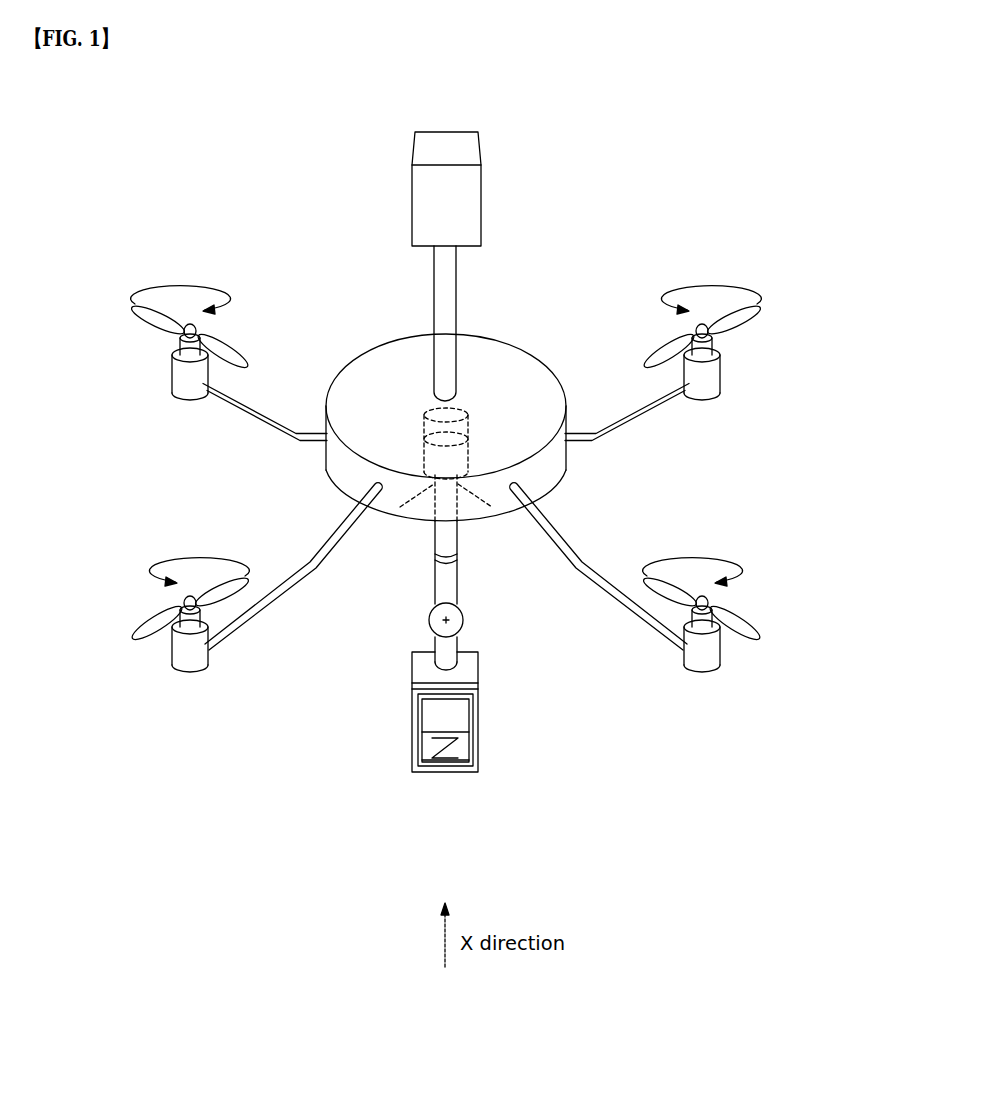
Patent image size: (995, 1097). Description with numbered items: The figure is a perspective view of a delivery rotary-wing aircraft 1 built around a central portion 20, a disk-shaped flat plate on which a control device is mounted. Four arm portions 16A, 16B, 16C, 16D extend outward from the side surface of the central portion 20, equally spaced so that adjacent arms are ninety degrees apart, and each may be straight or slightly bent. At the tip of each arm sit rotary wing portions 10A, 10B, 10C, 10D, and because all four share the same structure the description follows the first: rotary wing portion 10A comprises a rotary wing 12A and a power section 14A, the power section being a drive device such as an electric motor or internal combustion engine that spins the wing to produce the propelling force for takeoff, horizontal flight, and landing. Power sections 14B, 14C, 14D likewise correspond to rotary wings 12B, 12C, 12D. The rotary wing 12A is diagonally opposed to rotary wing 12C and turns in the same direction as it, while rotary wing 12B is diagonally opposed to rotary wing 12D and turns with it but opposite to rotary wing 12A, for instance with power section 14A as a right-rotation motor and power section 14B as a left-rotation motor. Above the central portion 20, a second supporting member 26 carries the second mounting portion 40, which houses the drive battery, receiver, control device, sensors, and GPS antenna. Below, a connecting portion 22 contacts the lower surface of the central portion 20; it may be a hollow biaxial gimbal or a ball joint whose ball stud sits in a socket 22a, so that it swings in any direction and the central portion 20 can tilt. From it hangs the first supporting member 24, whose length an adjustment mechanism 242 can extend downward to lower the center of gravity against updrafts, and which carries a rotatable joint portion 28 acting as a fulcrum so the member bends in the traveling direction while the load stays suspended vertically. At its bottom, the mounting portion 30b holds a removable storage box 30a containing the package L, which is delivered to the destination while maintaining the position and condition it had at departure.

The delivery rotary-wing aircraft 1 is at (650, 138).
The rotary wing portion 10A is at (134, 649).
The rotary wing portion 10B is at (757, 648).
The rotary wing portion 10C is at (757, 351).
The rotary wing portion 10D is at (134, 351).
The rotary wing 12A is at (145, 640).
The rotary wing 12B is at (748, 640).
The rotary wing 12C is at (742, 325).
The rotary wing 12D is at (152, 333).
The power section 14A is at (172, 660).
The power section 14B is at (712, 658).
The power section 14C is at (721, 378).
The power section 14D is at (172, 378).
The arm portion 16A is at (283, 573).
The arm portion 16B is at (605, 571).
The arm portion 16C is at (620, 422).
The arm portion 16D is at (270, 421).
The central portion 20 is at (503, 355).
The connecting portion 22 is at (428, 480).
The socket 22a is at (462, 480).
The first supporting member 24 is at (461, 590).
The adjustment mechanism 242 is at (435, 562).
The second supporting member 26 is at (434, 291).
The joint portion 28 is at (429, 617).
The storage box 30a is at (478, 728).
The mounting portion 30b is at (418, 670).
The second mounting portion 40 is at (481, 195).
The package L is at (470, 748).